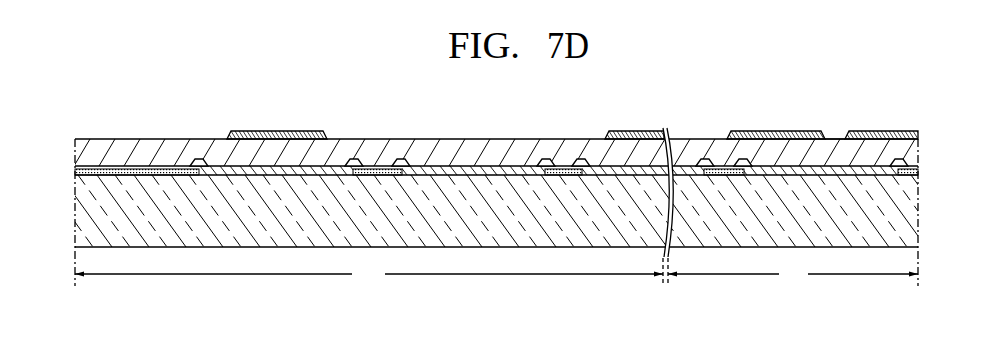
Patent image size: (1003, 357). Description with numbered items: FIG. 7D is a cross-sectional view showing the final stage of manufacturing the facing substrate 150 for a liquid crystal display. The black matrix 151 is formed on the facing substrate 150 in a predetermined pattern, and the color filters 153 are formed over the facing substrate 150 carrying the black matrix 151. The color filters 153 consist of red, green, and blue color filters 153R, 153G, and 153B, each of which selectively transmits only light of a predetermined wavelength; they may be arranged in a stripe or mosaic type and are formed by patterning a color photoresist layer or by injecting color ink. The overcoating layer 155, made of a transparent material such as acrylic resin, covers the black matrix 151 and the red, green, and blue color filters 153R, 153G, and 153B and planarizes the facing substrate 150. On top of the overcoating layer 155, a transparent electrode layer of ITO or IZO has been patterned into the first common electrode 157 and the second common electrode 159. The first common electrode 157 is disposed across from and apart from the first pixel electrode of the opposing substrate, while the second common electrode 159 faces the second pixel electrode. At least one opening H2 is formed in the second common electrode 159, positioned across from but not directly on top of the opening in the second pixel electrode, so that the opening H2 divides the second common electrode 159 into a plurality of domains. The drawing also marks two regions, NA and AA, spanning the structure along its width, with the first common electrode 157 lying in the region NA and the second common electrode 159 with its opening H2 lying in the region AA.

The facing substrate 150 is at (910, 220).
The black matrix 151 is at (724, 168).
The color filters 153 is at (905, 162).
The red color filter 153R is at (553, 192).
The green color filter 153G is at (470, 192).
The blue color filter 153B is at (635, 192).
The overcoating layer 155 is at (909, 147).
The first common electrode 157 is at (286, 131).
The second common electrode 159 is at (917, 131).
The opening H2 is at (845, 136).
The non-display area NA is at (369, 274).
The display area AA is at (793, 274).